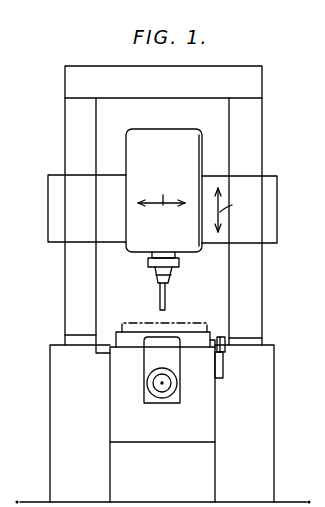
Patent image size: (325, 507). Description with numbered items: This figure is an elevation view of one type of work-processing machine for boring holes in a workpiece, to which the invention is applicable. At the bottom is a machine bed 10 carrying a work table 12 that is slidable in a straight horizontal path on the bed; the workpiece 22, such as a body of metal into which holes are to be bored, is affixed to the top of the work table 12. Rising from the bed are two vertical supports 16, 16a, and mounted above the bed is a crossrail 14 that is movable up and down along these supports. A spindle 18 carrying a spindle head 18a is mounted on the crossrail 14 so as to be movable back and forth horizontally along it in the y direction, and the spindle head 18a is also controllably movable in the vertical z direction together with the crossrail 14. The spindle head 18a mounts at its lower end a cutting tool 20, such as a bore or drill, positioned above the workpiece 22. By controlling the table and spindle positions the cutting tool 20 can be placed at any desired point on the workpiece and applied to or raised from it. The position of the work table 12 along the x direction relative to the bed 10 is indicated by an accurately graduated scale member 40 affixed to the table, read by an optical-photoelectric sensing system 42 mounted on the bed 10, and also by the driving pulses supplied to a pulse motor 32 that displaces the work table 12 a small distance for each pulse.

The machine bed 10 is at (110, 415).
The work table 12 is at (205, 338).
The crossrail 14 is at (269, 212).
The vertical support 16 is at (71, 134).
The vertical support 16a is at (257, 144).
The spindle 18 is at (176, 154).
The spindle head 18a is at (150, 275).
The cutting tool 20 is at (157, 296).
The workpiece 22 is at (165, 322).
The pulse motor 32 is at (162, 396).
The scale member 40 is at (218, 338).
The optical-photoelectric sensing system 42 is at (222, 367).